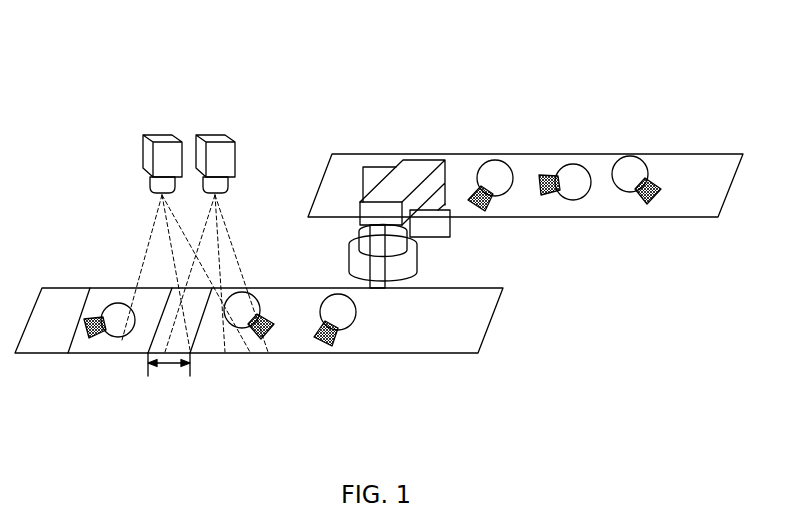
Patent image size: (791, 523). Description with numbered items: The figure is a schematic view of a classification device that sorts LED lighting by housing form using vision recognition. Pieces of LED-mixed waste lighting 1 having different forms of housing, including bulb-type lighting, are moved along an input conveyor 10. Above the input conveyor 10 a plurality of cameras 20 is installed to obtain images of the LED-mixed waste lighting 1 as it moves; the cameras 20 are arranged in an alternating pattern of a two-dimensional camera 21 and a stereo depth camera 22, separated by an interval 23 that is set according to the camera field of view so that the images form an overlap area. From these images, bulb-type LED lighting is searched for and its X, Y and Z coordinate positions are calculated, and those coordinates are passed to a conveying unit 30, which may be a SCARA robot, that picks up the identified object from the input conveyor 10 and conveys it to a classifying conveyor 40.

The LED-mixed waste lighting 1 is at (88, 340).
The input conveyor 10 is at (403, 353).
The cameras 20 is at (195, 182).
The 2D camera 21 is at (153, 133).
The stereo depth camera 22 is at (213, 124).
The interval between the cameras 23 is at (170, 372).
The conveying unit 30 is at (405, 178).
The classifying conveyor 40 is at (534, 153).